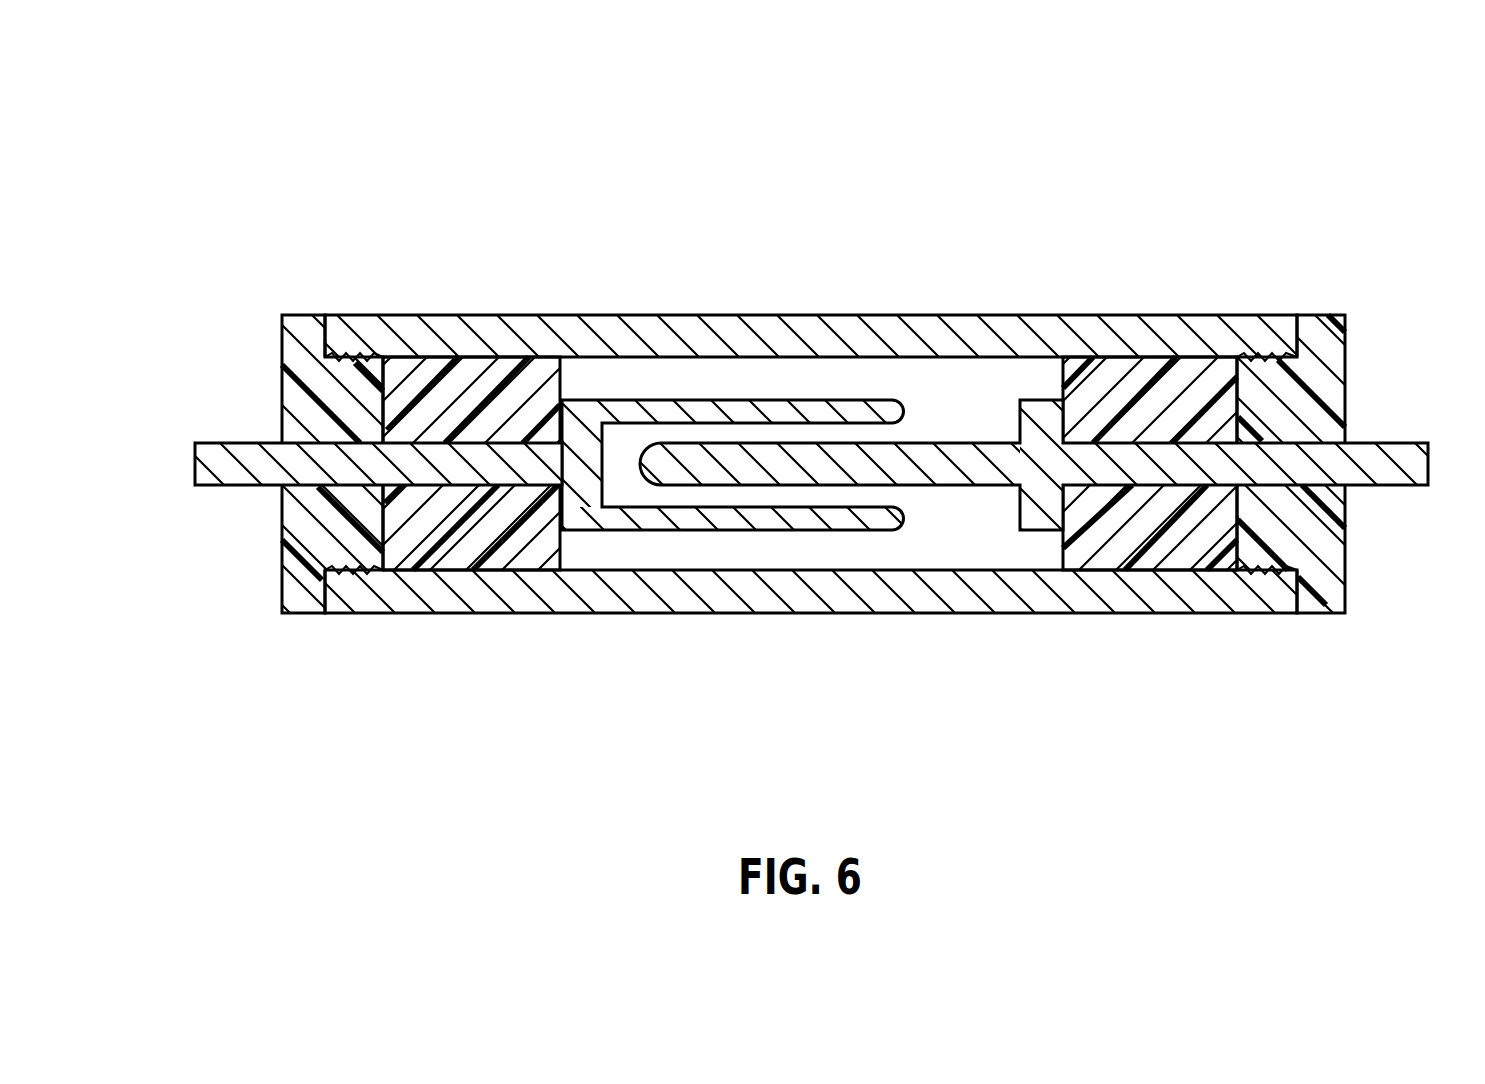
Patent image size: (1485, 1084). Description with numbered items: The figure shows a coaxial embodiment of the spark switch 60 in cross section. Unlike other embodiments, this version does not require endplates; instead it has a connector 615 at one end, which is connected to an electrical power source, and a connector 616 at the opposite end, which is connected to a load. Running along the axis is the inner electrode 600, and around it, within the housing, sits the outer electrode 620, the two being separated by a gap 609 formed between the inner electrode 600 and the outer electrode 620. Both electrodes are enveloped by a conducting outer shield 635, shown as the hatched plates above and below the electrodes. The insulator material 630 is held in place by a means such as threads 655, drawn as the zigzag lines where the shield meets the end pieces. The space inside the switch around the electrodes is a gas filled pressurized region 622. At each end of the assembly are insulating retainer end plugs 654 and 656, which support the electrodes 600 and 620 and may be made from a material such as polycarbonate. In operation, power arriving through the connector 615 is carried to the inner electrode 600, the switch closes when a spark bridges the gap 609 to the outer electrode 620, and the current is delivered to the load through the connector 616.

The spark switch 60 is at (981, 152).
The inner electrode 600 is at (1059, 456).
The gap 609 is at (753, 433).
The connector 615 is at (220, 492).
The connector 616 is at (1390, 468).
The outer electrode 620 is at (627, 520).
The gas filled pressurized region 622 is at (775, 543).
The insulator material 630 is at (510, 385).
The conducting outer shield 635 is at (704, 330).
The insulating retainer end plug 654 is at (320, 412).
The threads 655 is at (335, 352).
The insulating retainer end plug 656 is at (1322, 583).